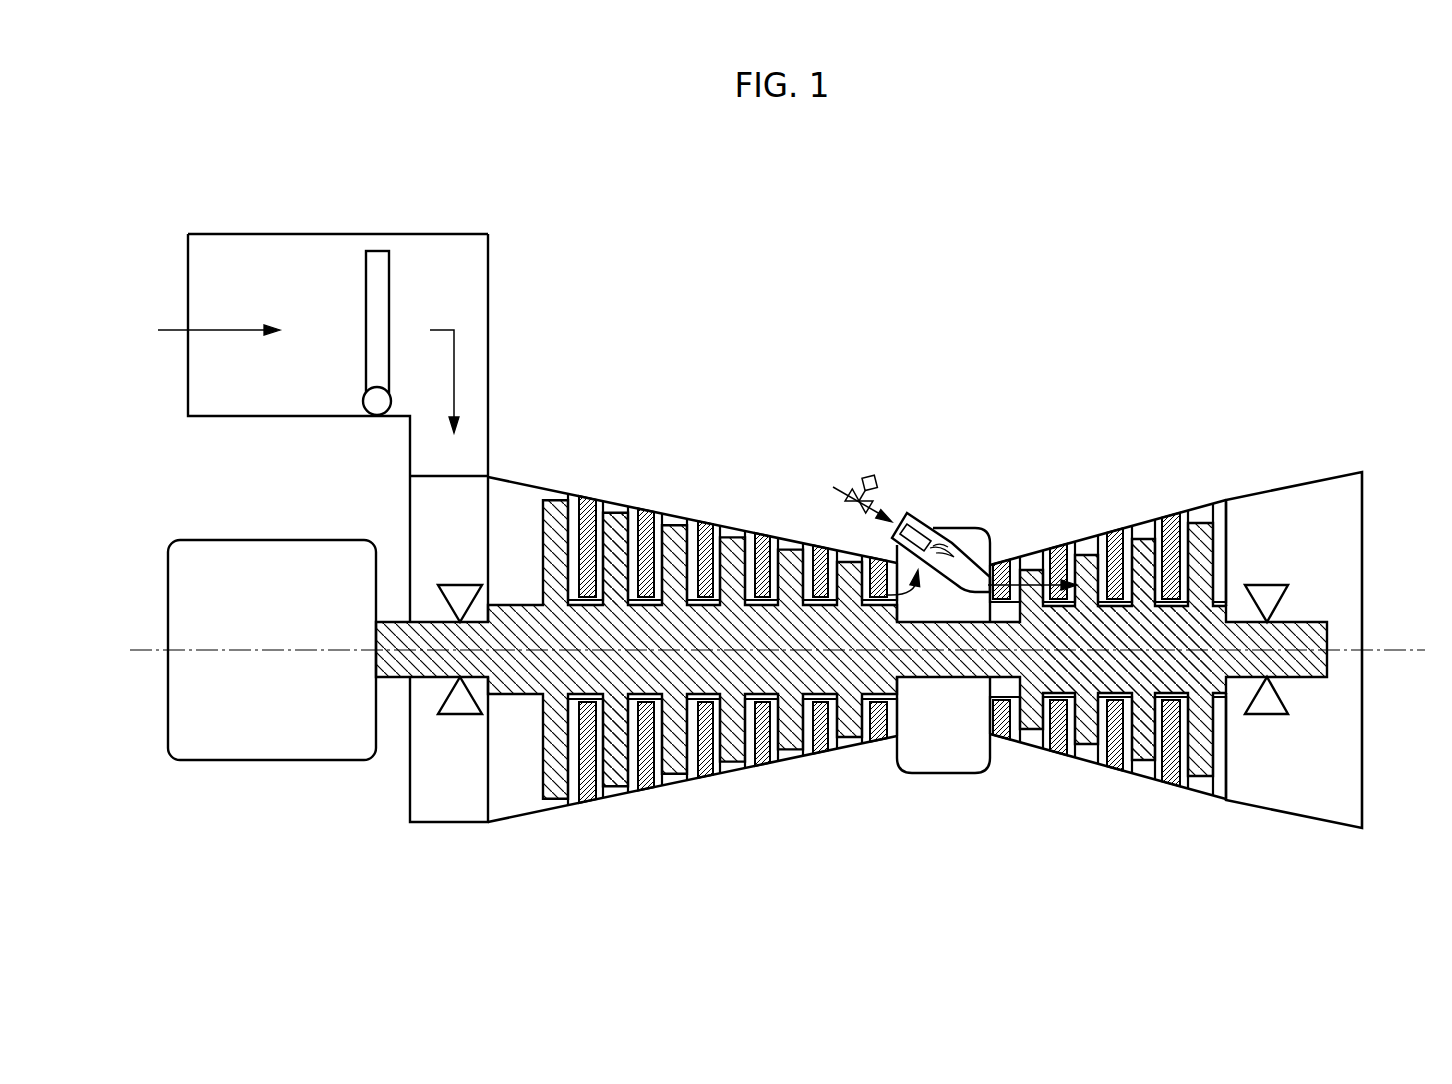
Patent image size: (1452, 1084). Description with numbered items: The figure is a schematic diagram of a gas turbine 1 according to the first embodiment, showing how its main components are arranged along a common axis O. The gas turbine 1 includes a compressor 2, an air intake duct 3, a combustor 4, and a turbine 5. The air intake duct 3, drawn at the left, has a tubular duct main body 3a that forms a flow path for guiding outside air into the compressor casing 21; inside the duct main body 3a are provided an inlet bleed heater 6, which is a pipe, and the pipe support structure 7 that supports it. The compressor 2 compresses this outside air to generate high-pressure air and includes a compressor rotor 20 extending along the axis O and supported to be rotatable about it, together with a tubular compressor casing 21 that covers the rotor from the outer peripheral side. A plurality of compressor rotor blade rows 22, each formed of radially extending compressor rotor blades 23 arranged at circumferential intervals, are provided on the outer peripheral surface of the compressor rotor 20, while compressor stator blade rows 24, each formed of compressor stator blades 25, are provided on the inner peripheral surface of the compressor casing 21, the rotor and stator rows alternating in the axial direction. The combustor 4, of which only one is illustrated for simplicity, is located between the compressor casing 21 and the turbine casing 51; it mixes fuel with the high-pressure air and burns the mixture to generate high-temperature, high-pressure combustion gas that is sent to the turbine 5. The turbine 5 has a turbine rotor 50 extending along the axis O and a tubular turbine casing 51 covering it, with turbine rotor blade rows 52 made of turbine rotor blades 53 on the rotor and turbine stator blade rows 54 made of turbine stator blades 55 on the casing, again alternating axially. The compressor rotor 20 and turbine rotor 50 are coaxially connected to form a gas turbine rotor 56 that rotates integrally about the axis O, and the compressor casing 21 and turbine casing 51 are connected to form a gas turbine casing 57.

The gas turbine 1 is at (1250, 460).
The compressor 2 is at (550, 838).
The air intake duct 3 is at (505, 208).
The duct main body 3a is at (421, 234).
The combustor 4 is at (930, 515).
The turbine 5 is at (1222, 830).
The inlet bleed heater 6 is at (373, 273).
The pipe support structure 7 is at (377, 333).
The compressor rotor 20 is at (670, 665).
The compressor casing 21 is at (548, 490).
The compressor rotor blade rows 22 is at (617, 778).
The compressor rotor blades 23 is at (615, 649).
The compressor stator blade rows 24 is at (643, 508).
The compressor stator blades 25 is at (646, 553).
The turbine rotor 50 is at (1187, 670).
The turbine casing 51 is at (1080, 540).
The turbine rotor blade rows 52 is at (1142, 747).
The turbine rotor blades 53 is at (1143, 649).
The turbine stator blade rows 54 is at (1113, 530).
The turbine stator blades 55 is at (1115, 563).
The gas turbine rotor 56 is at (925, 678).
The gas turbine casing 57 is at (800, 757).
The axis O is at (1410, 655).